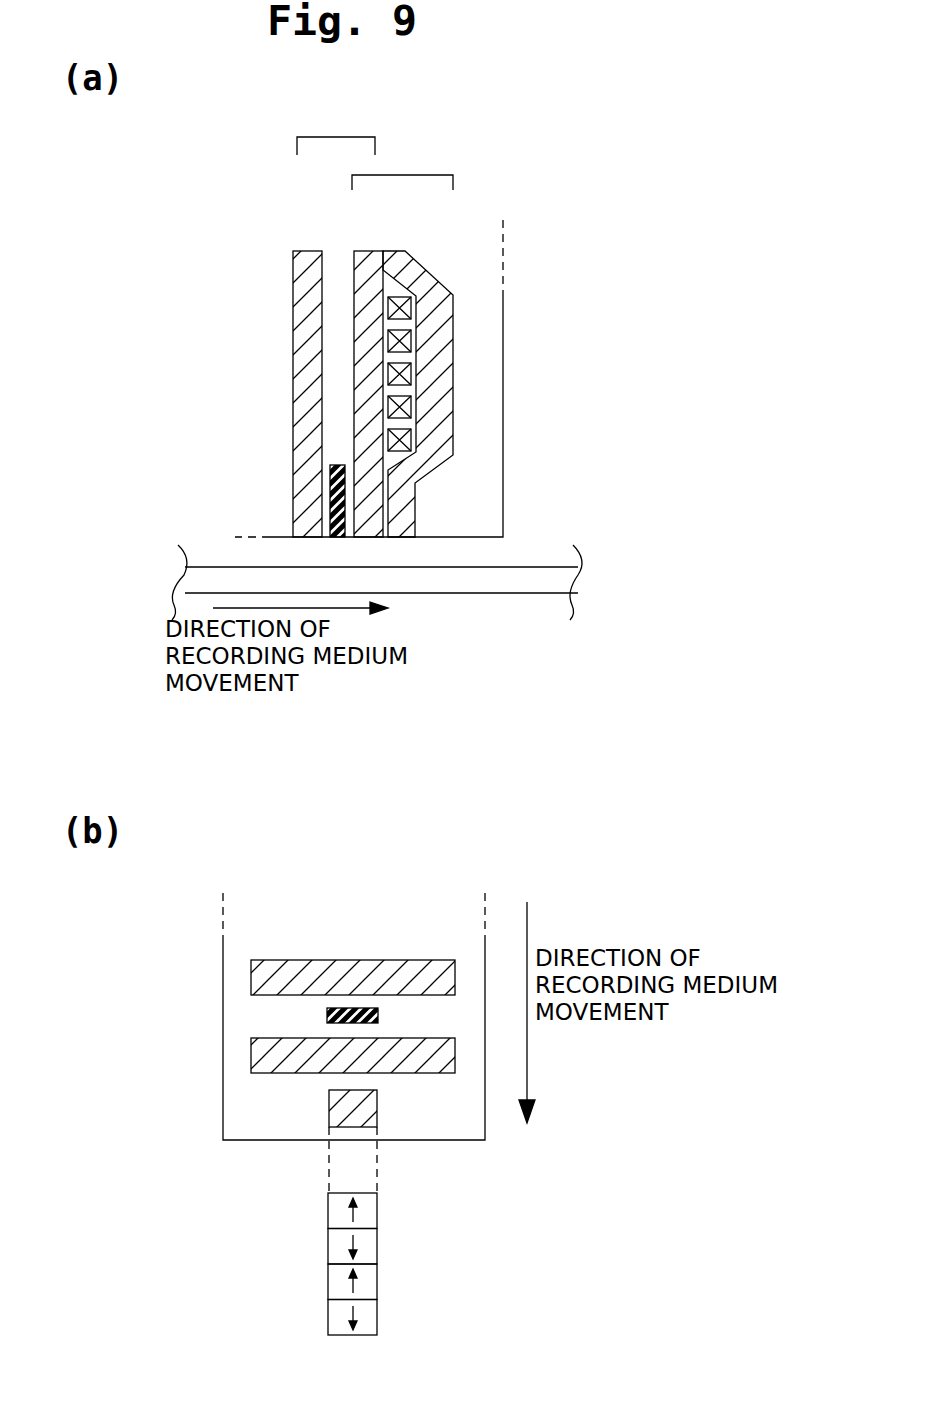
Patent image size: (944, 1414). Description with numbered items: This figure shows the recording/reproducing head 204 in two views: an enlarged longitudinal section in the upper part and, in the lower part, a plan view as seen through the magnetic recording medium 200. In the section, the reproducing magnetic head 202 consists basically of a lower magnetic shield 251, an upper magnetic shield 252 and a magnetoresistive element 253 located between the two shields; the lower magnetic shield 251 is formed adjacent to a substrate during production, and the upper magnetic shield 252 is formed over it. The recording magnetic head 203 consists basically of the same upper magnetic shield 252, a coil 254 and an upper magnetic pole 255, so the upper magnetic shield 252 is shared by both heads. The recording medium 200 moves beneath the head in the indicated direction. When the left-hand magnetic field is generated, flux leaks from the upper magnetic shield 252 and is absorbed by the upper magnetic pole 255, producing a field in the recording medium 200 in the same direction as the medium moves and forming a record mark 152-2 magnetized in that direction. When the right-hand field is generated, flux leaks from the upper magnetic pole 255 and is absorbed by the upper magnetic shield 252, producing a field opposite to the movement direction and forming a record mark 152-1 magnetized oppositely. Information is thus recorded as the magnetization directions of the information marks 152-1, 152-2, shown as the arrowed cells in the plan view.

The reproducing magnetic head 202 is at (320, 137).
The recording magnetic head 203 is at (405, 175).
The recording/reproducing head 204 is at (487, 498).
The magnetic recording medium 200 is at (552, 583).
The lower magnetic shield 251 is at (299, 252).
The upper magnetic shield 252 is at (358, 252).
The magnetoresistive element 253 is at (332, 487).
The coil 254 is at (424, 292).
The upper magnetic pole 255 is at (448, 364).
The record mark 152-1 is at (377, 1210).
The record mark 152-2 is at (377, 1250).